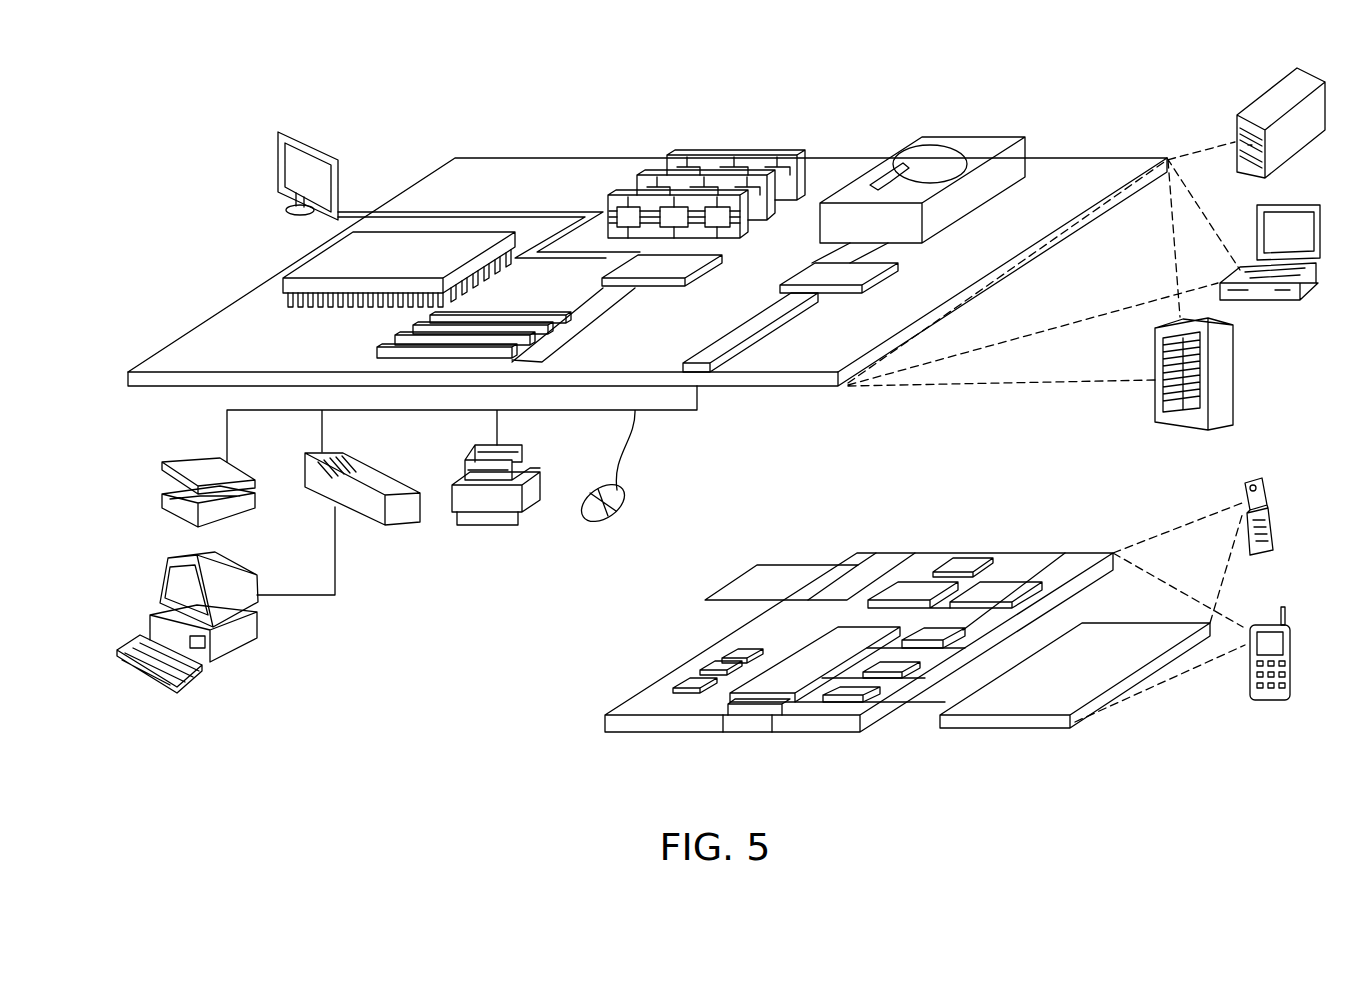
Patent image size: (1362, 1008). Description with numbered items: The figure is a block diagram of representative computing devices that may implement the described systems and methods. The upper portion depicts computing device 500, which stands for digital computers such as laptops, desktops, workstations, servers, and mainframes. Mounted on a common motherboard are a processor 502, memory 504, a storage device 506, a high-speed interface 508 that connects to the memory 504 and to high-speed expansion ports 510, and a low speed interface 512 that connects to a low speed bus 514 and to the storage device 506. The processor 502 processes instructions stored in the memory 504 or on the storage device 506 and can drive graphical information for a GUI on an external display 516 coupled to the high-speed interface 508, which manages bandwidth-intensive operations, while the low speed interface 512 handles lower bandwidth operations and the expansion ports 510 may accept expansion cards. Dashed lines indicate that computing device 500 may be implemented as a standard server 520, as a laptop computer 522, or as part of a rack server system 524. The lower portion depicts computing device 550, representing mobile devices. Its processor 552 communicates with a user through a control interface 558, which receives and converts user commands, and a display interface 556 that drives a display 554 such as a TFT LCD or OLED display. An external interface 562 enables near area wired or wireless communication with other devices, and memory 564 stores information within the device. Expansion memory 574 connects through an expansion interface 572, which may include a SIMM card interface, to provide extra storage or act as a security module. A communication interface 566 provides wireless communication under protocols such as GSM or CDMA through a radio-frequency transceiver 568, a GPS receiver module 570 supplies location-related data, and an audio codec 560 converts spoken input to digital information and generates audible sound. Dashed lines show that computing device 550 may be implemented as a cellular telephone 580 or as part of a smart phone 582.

The computing device 500 is at (678, 417).
The processor 502 is at (305, 262).
The memory 504 is at (738, 152).
The storage device 506 is at (963, 135).
The high-speed interface 508 is at (672, 263).
The high-speed expansion ports 510 is at (403, 335).
The low speed interface 512 is at (812, 268).
The low speed bus 514 is at (703, 358).
The display 516 is at (288, 130).
The standard server 520 is at (1258, 108).
The laptop computer 522 is at (1310, 205).
The rack server system 524 is at (1235, 375).
The computing device 550 is at (556, 743).
The processor 552 is at (786, 668).
The display 554 is at (1112, 635).
The display interface 556 is at (862, 692).
The control interface 558 is at (900, 667).
The audio codec 560 is at (935, 645).
The external interface 562 is at (748, 718).
The memory 564 is at (700, 675).
The communication interface 566 is at (915, 585).
The transceiver 568 is at (1003, 582).
The GPS receiver module 570 is at (963, 560).
The expansion interface 572 is at (838, 563).
The expansion memory 574 is at (760, 565).
The cellular telephone 580 is at (1252, 482).
The smart phone 582 is at (1263, 622).